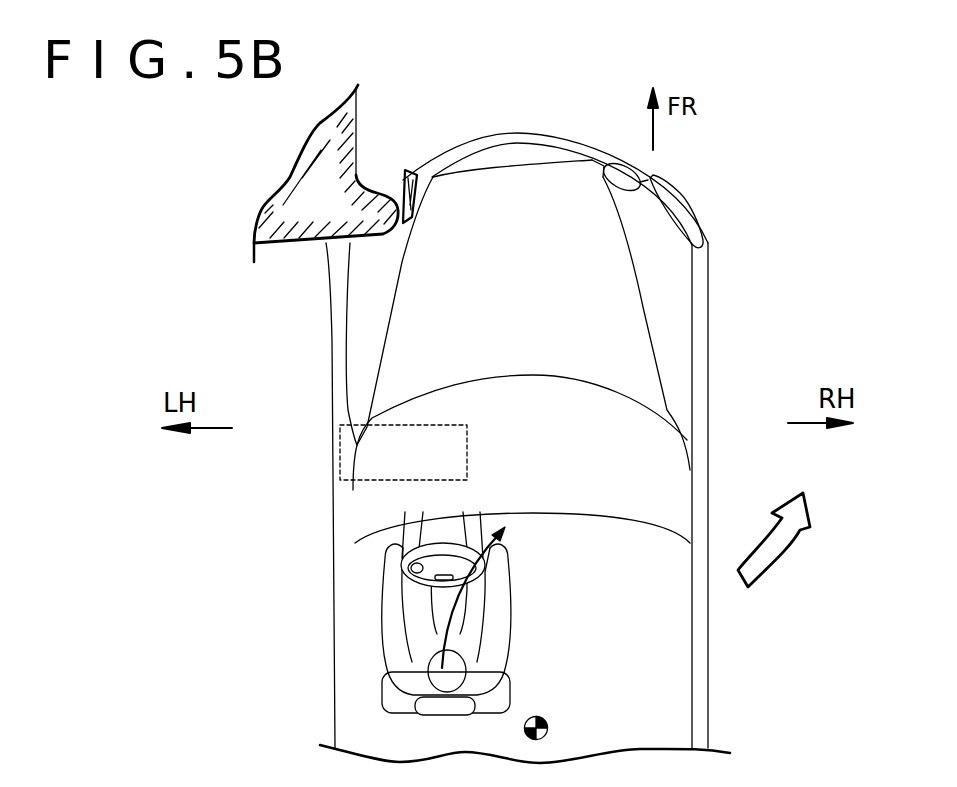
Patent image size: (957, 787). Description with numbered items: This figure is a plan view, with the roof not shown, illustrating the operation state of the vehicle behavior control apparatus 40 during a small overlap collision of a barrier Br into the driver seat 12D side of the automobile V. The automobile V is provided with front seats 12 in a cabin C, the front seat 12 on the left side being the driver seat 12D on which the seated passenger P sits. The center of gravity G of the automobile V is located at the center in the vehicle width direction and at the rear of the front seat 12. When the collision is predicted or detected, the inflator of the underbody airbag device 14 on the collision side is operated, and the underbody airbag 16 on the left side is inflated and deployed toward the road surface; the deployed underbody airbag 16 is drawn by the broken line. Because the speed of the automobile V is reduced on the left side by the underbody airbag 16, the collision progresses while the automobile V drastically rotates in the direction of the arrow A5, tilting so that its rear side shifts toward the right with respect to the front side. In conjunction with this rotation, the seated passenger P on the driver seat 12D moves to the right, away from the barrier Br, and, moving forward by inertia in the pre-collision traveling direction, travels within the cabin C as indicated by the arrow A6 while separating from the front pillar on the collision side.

The barrier Br is at (347, 127).
The automobile V is at (710, 655).
The underbody airbag 16 is at (503, 448).
The underbody airbag device 14 is at (470, 438).
The vehicle behavior control apparatus 40 is at (513, 463).
The seated passenger P is at (497, 647).
The driver seat 12D is at (535, 685).
The front seat 12 is at (512, 688).
The cabin C is at (653, 631).
The center of gravity G is at (548, 725).
The arrow A5 is at (793, 539).
The arrow A6 is at (493, 591).